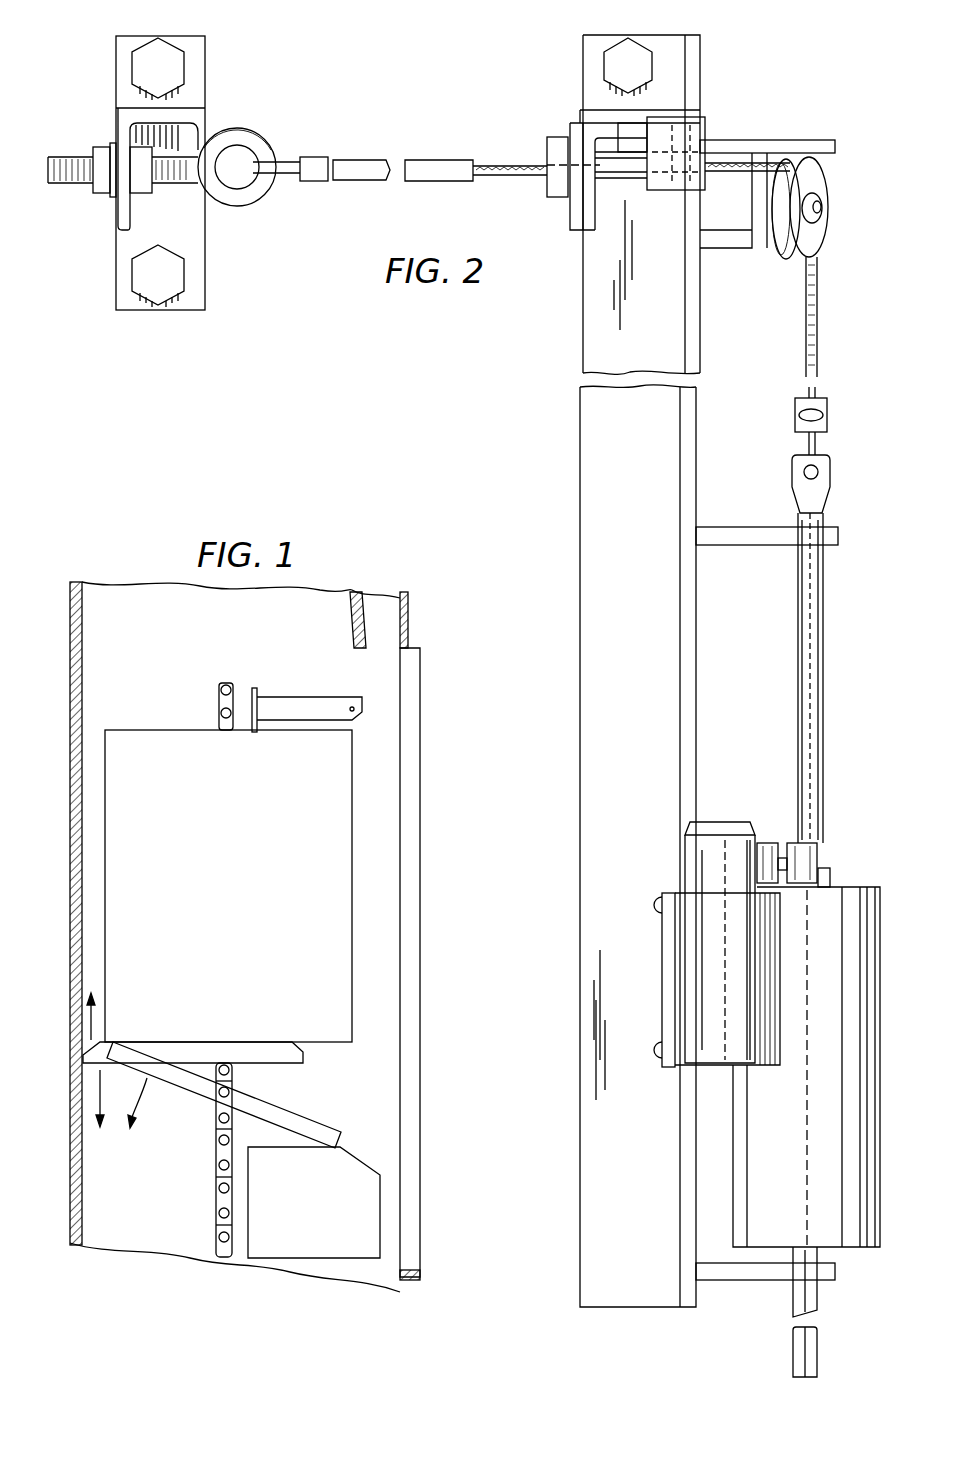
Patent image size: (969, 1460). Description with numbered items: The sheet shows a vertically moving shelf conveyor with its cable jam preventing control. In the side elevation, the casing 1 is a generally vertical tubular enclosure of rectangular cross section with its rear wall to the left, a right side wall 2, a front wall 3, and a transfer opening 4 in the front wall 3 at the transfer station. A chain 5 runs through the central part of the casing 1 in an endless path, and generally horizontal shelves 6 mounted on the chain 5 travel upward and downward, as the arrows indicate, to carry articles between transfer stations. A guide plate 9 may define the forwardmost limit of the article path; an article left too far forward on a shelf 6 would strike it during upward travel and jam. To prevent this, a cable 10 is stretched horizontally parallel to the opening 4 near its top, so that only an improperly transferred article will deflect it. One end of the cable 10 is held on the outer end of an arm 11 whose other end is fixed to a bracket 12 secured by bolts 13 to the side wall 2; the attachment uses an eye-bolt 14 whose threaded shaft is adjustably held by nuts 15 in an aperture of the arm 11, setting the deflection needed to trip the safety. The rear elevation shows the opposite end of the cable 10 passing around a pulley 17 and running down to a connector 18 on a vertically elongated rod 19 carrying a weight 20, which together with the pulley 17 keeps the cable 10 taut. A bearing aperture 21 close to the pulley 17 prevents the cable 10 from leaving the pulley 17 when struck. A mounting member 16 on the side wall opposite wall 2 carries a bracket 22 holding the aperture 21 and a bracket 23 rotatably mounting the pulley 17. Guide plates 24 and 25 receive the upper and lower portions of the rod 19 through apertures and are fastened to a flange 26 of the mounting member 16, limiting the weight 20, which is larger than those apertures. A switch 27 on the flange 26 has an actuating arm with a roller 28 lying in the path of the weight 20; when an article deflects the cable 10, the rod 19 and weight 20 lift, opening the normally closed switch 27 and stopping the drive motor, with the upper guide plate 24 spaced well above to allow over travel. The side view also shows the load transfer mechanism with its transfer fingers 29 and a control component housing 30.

In FIG. 1, the casing 1 is at (70, 875).
In FIG. 1, the right side wall 2 is at (268, 664).
In FIG. 1, the front wall 3 is at (408, 625).
In FIG. 1, the transfer opening 4 is at (420, 795).
In FIG. 1, the chain 5 is at (218, 717).
In FIG. 1, the shelves 6 is at (295, 1060).
In FIG. 1, the guide plate 9 is at (400, 612).
In FIG. 1, the cable 10 is at (352, 709).
In FIG. 2, the cable 10 is at (418, 160).
In FIG. 1, the arm 11 is at (294, 686).
In FIG. 2, the arm 11 is at (200, 108).
In FIG. 1, the bracket 12 is at (257, 722).
In FIG. 2, the bracket 12 is at (195, 80).
In FIG. 2, the bolts 13 is at (178, 58).
In FIG. 2, the eye-bolt 14 is at (228, 206).
In FIG. 2, the nuts 15 is at (102, 194).
In FIG. 2, the mounting member 16 is at (635, 204).
In FIG. 2, the pulley 17 is at (818, 184).
In FIG. 2, the connector 18 is at (827, 425).
In FIG. 2, the rod 19 is at (824, 620).
In FIG. 2, the weight 20 is at (865, 945).
In FIG. 2, the bearing aperture 21 is at (572, 207).
In FIG. 2, the bracket 22 is at (638, 118).
In FIG. 2, the bracket 23 is at (752, 248).
In FIG. 2, the guide plate 24 is at (766, 527).
In FIG. 2, the guide plate 25 is at (752, 1281).
In FIG. 2, the flange 26 is at (698, 672).
In FIG. 2, the switch 27 is at (722, 917).
In FIG. 2, the roller 28 is at (805, 843).
In FIG. 1, the transfer fingers 29 is at (275, 1112).
In FIG. 1, the control component housing 30 is at (332, 1220).